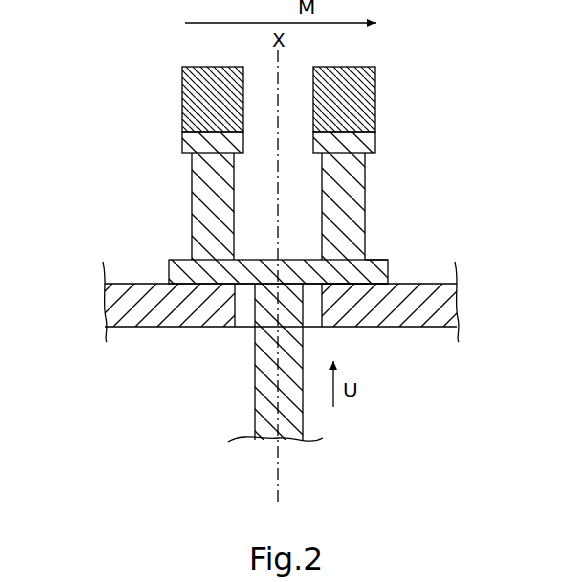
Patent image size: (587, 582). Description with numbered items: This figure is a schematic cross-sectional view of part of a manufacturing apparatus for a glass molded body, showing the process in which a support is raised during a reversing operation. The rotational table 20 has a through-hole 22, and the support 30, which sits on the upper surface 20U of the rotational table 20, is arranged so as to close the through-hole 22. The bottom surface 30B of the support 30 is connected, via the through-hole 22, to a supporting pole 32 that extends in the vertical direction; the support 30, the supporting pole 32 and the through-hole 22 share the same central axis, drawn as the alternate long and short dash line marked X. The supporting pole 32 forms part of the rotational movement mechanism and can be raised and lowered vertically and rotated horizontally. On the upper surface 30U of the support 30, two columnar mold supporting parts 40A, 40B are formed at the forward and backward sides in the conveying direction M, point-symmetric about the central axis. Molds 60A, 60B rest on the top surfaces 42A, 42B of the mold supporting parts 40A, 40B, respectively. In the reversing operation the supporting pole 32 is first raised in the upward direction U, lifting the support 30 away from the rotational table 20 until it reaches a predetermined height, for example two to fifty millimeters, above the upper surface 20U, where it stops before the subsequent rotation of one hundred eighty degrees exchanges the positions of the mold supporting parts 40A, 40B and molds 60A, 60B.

The rotational table 20 is at (430, 303).
The upper surface of the rotational table 20U is at (437, 273).
The through-hole 22 is at (246, 307).
The support 30 is at (385, 270).
The upper surface of the support 30U is at (378, 250).
The bottom surface of the support 30B is at (366, 294).
The supporting pole 32 is at (257, 418).
The mold supporting part 40A is at (350, 170).
The mold supporting part 40B is at (202, 188).
The top surface 42A is at (360, 115).
The top surface 42B is at (196, 120).
The mold 60A is at (367, 77).
The mold 60B is at (193, 83).